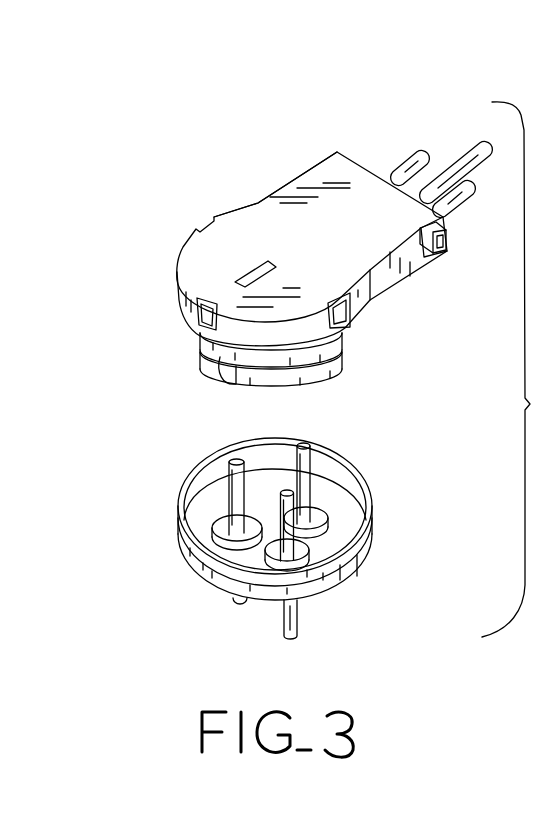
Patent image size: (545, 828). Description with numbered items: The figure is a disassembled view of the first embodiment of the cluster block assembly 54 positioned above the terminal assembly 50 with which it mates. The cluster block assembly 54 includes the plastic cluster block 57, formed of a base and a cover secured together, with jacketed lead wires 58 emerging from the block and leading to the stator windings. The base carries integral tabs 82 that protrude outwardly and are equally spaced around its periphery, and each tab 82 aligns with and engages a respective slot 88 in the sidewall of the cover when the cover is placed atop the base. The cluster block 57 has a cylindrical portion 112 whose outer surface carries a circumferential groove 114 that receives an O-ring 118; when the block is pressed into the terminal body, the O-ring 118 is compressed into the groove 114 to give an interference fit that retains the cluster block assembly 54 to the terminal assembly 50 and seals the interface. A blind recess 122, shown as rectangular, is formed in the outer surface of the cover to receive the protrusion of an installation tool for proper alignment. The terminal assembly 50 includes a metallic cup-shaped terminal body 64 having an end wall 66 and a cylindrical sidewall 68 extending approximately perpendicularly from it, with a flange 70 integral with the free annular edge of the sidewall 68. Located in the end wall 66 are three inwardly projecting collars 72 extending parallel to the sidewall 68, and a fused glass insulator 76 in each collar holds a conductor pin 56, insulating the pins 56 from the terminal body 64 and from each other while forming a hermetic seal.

The terminal assembly 50 is at (289, 540).
The cluster block assembly 54 is at (243, 166).
The conductor pins 56 is at (297, 636).
The cluster block 57 is at (289, 184).
The jacketed lead wires 58 is at (462, 170).
The terminal body 64 is at (283, 528).
The end wall 66 is at (270, 505).
The cylindrical sidewall 68 is at (364, 557).
The flange 70 is at (188, 491).
The collars 72 is at (238, 548).
The fused glass insulator 76 is at (327, 507).
The tabs 82 is at (435, 254).
The slots 88 is at (445, 240).
The cylindrical portion 112 is at (349, 366).
The groove 114 is at (236, 367).
The O-ring 118 is at (343, 338).
The blind recess 122 is at (131, 239).